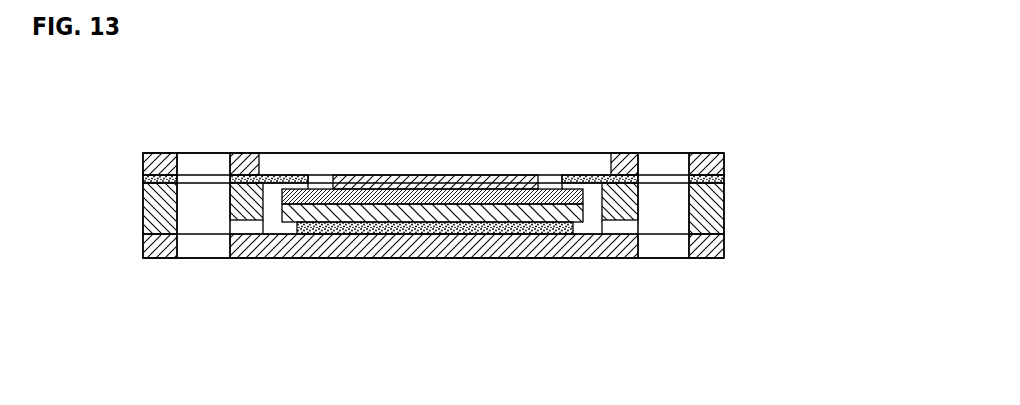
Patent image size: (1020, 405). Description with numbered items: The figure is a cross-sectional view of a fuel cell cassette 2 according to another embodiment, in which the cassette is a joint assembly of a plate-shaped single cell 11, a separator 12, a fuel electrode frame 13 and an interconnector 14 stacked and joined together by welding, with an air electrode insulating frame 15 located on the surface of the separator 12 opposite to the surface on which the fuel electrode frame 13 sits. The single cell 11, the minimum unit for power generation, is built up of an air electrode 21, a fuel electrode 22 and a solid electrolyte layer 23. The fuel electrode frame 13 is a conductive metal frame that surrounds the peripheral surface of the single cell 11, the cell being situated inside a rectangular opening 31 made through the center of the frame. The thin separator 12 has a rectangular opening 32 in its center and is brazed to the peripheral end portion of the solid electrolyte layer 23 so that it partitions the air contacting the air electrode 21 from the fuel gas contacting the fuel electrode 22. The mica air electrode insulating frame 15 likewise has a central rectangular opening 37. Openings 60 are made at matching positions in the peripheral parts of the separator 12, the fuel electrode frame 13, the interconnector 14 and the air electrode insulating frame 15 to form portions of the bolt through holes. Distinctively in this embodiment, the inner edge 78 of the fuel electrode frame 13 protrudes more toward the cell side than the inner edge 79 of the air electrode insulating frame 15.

The fuel cell cassette 2 is at (136, 147).
The single cell 11 is at (432, 165).
The separator 12 is at (462, 158).
The fuel electrode frame 13 is at (462, 241).
The interconnector 14 is at (725, 247).
The air electrode insulating frame 15 is at (462, 133).
The air electrode 21 is at (477, 183).
The fuel electrode 22 is at (495, 136).
The solid electrolyte layer 23 is at (436, 197).
The opening 31 is at (266, 202).
The opening 32 is at (313, 186).
The opening 37 is at (262, 153).
The openings 60 is at (227, 179).
The inner edge 78 is at (600, 177).
The inner edge 79 is at (608, 168).